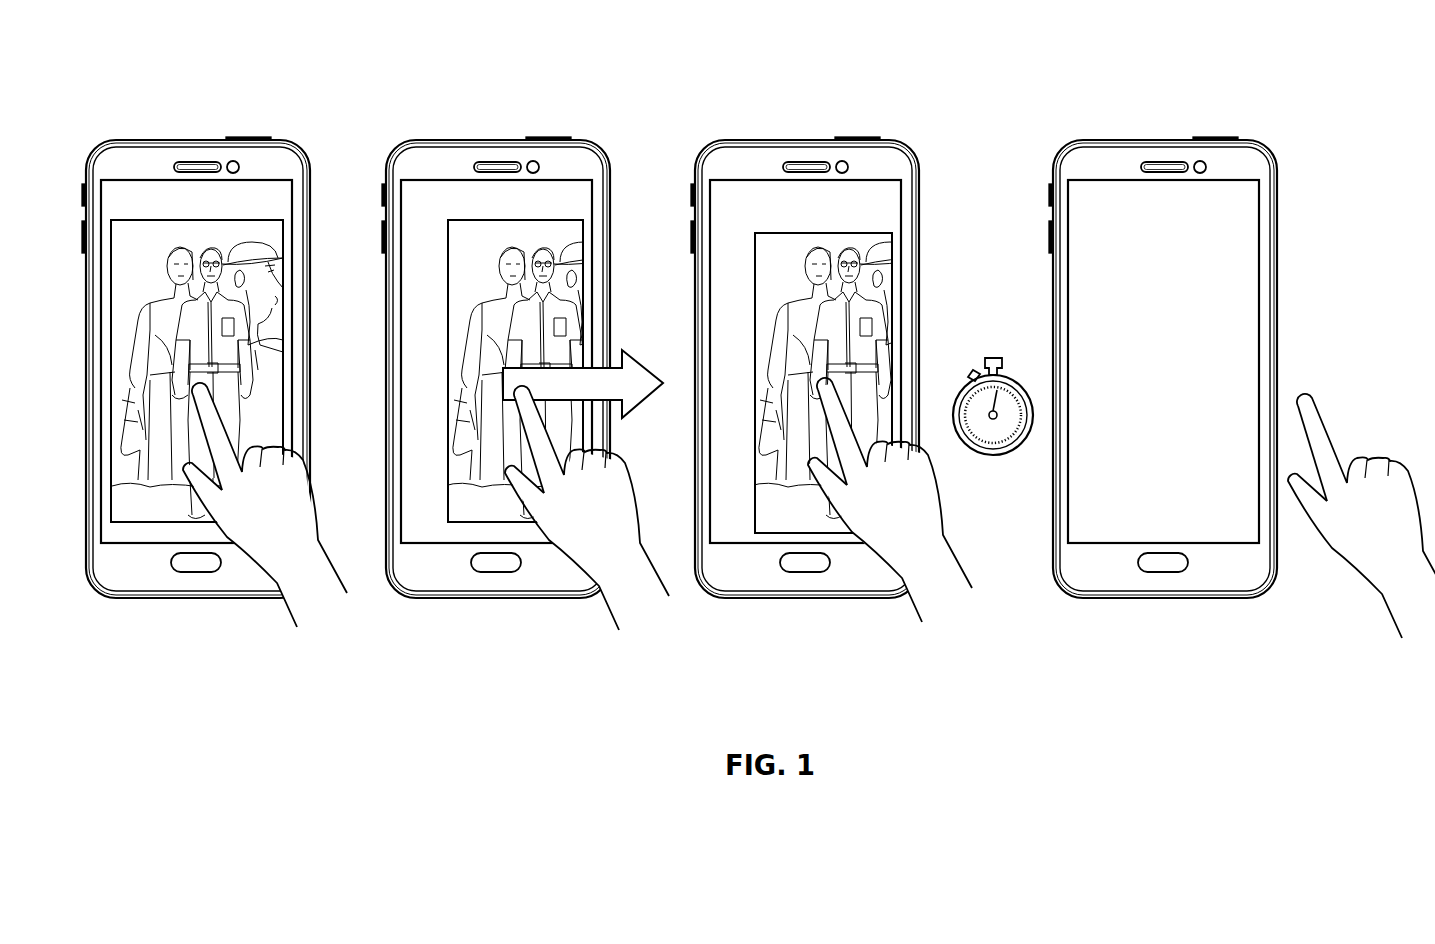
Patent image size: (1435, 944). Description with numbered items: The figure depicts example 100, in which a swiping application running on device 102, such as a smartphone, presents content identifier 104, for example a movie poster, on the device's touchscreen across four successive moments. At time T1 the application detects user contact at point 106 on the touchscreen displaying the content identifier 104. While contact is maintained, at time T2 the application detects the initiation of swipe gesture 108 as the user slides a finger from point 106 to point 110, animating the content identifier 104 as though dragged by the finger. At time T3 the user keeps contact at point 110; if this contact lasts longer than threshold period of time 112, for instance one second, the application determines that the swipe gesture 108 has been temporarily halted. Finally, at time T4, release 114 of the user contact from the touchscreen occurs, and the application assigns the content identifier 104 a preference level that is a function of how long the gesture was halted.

The example 100 is at (790, 49).
The device 102 is at (137, 158).
The content identifier 104 is at (277, 283).
The point 106 is at (220, 387).
The swipe gesture 108 is at (637, 353).
The point 110 is at (523, 398).
The threshold period of time 112 is at (990, 358).
The release 114 is at (1373, 460).